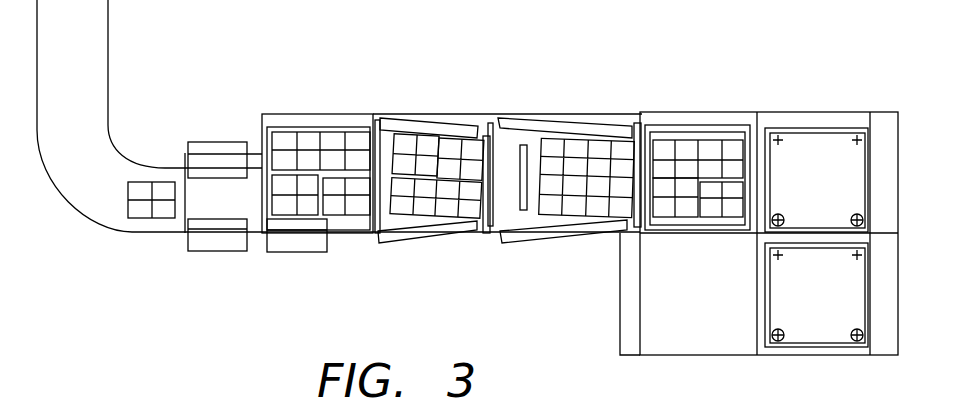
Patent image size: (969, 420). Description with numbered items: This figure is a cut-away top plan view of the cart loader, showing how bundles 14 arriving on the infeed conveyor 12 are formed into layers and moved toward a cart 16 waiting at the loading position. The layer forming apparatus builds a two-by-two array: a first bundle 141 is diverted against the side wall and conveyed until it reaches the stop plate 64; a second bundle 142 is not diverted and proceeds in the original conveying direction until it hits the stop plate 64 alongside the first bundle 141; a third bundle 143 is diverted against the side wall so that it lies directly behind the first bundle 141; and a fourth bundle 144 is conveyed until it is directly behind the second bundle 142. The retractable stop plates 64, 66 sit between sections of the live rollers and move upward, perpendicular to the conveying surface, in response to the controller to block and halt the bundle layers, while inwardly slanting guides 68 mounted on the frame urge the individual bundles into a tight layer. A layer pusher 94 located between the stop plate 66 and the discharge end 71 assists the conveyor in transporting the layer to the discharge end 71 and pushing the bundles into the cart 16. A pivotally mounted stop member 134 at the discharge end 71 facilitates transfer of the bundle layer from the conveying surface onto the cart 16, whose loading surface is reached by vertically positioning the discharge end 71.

The infeed conveyor 12 is at (71, 212).
The bundle 14 is at (143, 220).
The cart 16 is at (720, 125).
The stop plate 64 is at (375, 124).
The stop plate 66 is at (489, 122).
The inwardly slanting guide 68 is at (442, 122).
The discharge end 71 is at (640, 232).
The layer pusher 94 is at (516, 190).
The stop member 134 is at (637, 125).
The first bundle 141 is at (337, 140).
The second bundle 142 is at (357, 208).
The third bundle 143 is at (288, 140).
The fourth bundle 144 is at (288, 205).